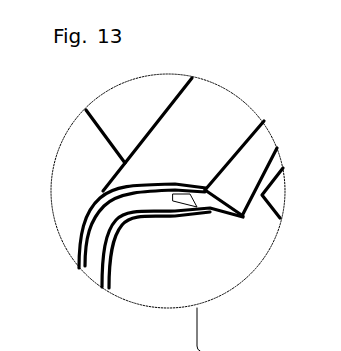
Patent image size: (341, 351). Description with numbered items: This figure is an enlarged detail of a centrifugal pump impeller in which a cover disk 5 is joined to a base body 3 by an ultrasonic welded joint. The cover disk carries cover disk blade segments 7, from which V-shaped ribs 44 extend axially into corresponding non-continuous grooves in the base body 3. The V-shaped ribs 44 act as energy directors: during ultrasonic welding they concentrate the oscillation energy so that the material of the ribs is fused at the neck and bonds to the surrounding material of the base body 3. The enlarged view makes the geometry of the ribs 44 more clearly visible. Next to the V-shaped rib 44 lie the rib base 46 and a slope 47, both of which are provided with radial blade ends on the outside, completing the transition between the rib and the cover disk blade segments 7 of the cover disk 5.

The base body 3 is at (340, 37).
The cover disk 5 is at (150, 72).
The cover disk blade segments 7 is at (215, 145).
The V-shaped ribs 44 is at (158, 202).
The rib base 46 is at (172, 191).
The slope 47 is at (235, 183).